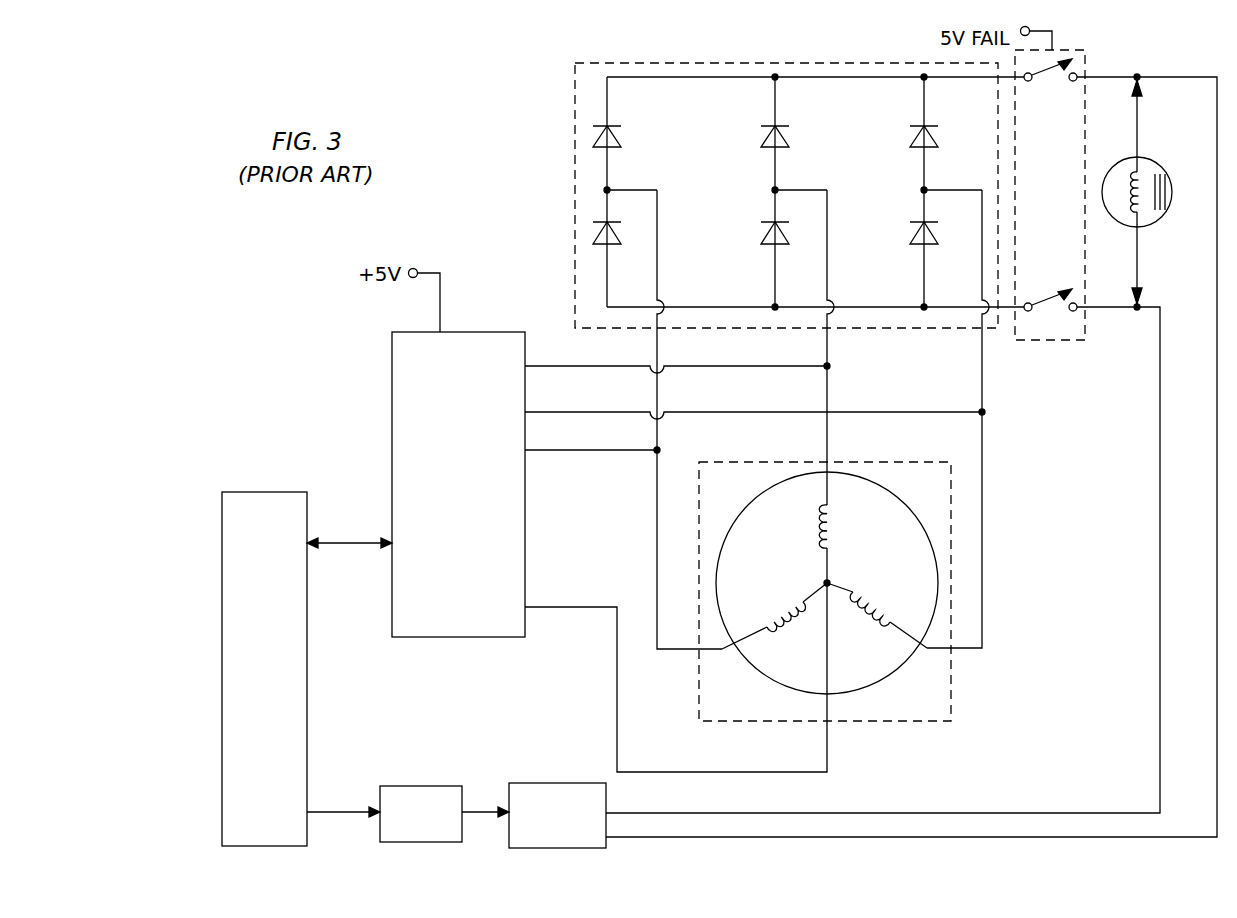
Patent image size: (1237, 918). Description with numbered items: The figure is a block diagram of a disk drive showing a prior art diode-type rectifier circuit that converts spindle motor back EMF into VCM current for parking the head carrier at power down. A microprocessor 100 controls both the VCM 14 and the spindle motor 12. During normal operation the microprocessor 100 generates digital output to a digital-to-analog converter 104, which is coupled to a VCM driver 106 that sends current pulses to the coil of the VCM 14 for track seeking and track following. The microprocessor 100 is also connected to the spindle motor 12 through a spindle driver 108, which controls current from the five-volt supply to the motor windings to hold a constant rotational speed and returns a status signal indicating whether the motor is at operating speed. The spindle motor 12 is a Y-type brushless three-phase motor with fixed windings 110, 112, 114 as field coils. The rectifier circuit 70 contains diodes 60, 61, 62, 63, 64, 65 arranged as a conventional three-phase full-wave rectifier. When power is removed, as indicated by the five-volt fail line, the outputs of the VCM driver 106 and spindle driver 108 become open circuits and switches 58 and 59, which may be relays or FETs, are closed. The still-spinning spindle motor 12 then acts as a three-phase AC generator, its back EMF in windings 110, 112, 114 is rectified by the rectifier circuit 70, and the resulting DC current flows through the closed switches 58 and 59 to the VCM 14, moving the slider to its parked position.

The spindle motor 12 is at (925, 722).
The VCM 14 is at (1170, 168).
The switch 58 is at (1050, 82).
The switch 59 is at (1050, 282).
The diode 60 is at (620, 142).
The diode 61 is at (788, 142).
The diode 62 is at (937, 142).
The diode 63 is at (609, 248).
The diode 64 is at (774, 248).
The diode 65 is at (924, 248).
The rectifier circuit 70 is at (577, 105).
The microprocessor 100 is at (258, 492).
The digital-to-analog converter 104 is at (423, 786).
The VCM driver 106 is at (549, 783).
The spindle driver 108 is at (480, 637).
The winding 110 is at (797, 625).
The winding 112 is at (830, 533).
The winding 114 is at (873, 593).